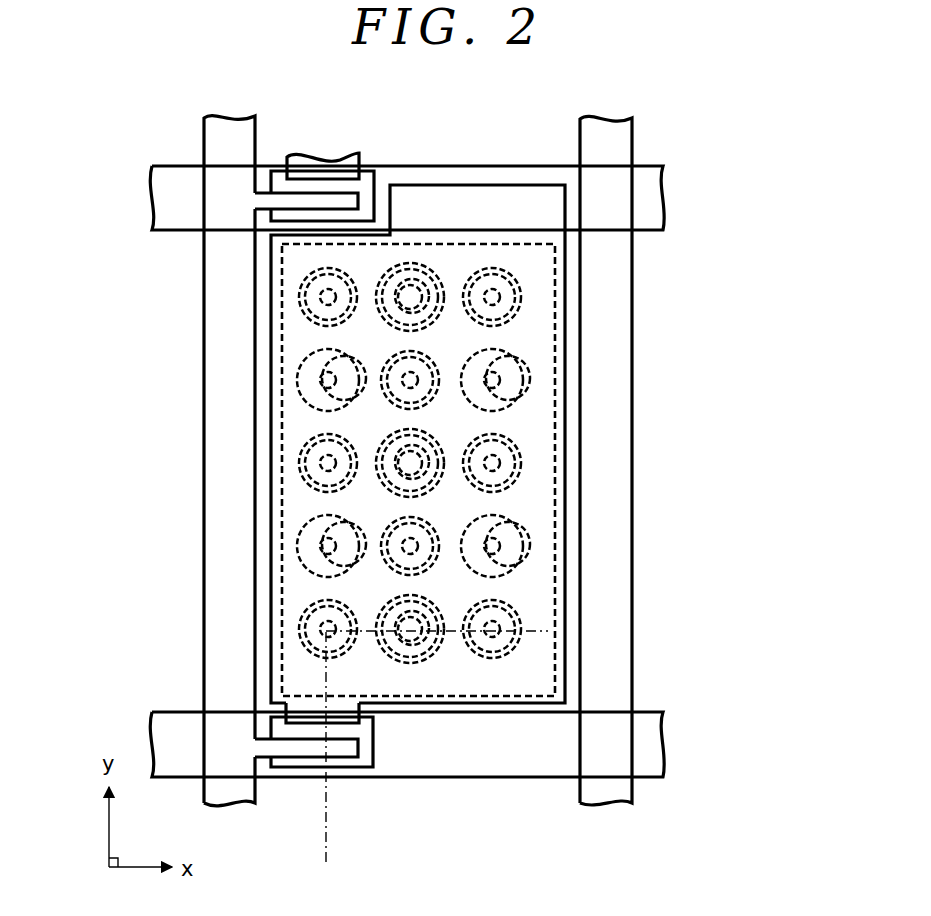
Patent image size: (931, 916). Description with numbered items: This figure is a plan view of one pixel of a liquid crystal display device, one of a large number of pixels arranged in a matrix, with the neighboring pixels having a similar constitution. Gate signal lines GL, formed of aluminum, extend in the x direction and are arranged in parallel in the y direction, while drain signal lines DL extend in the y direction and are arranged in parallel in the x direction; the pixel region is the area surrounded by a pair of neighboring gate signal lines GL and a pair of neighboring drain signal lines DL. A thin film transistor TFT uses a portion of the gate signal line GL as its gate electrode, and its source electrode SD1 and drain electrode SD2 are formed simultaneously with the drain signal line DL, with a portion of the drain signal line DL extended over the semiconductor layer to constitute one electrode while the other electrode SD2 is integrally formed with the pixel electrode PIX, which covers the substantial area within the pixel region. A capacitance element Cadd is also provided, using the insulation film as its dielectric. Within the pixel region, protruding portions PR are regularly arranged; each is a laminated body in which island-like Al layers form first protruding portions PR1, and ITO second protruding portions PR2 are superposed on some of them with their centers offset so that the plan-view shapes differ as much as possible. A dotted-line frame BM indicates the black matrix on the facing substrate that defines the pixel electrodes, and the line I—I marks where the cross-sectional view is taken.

The drain signal line DL is at (232, 794).
The gate signal line GL is at (663, 189).
The capacitance element Cadd is at (522, 197).
The thin film transistor TFT is at (338, 770).
The source electrode SD1 is at (293, 748).
The drain electrode SD2 is at (350, 726).
The pixel electrode PIX is at (567, 463).
The black matrix BM is at (557, 311).
The protruding portion PR is at (426, 263).
The first protruding portion PR1 is at (401, 617).
The second protruding portion PR2 is at (422, 655).
The line I— I is at (538, 636).